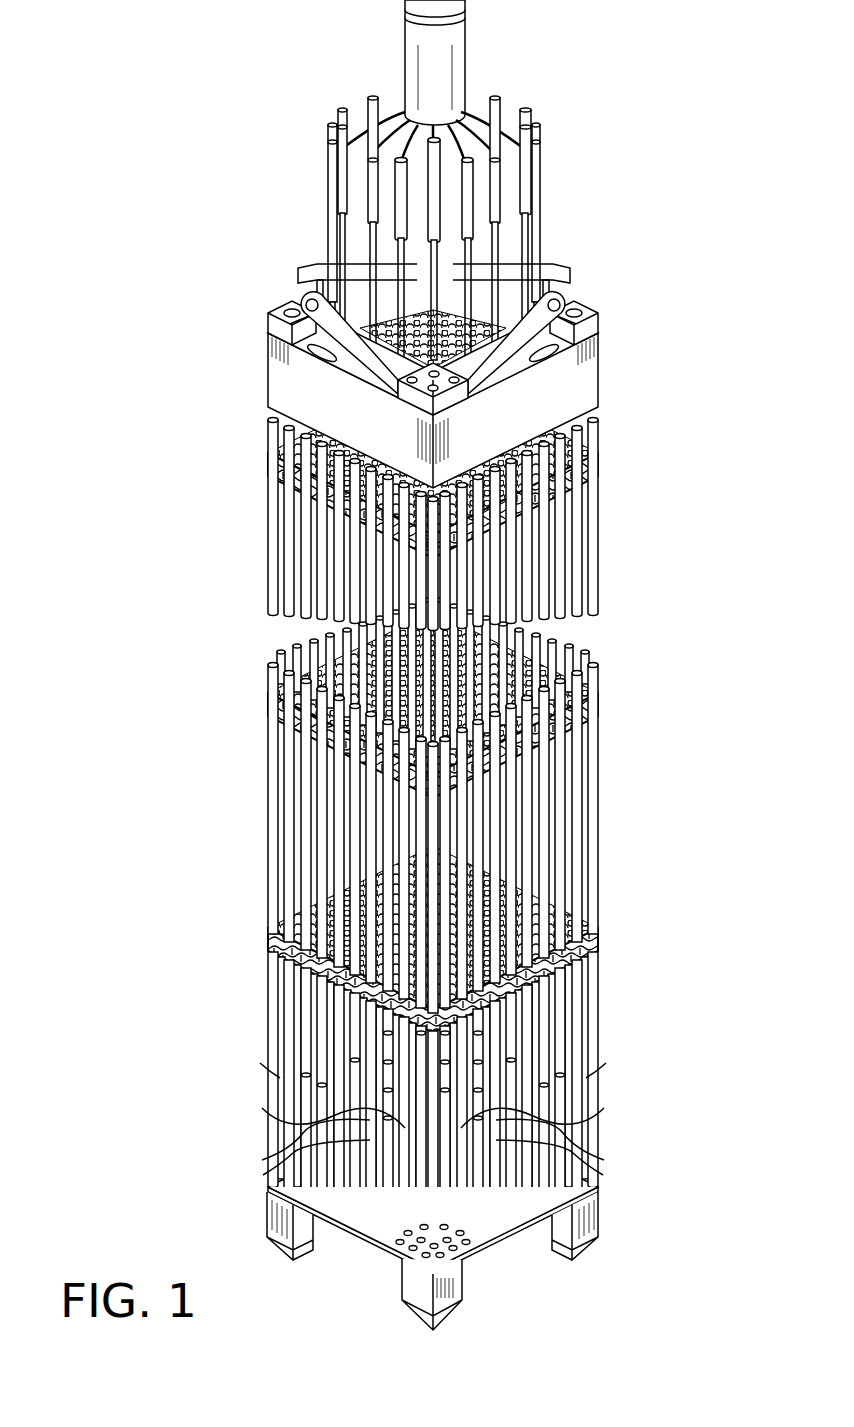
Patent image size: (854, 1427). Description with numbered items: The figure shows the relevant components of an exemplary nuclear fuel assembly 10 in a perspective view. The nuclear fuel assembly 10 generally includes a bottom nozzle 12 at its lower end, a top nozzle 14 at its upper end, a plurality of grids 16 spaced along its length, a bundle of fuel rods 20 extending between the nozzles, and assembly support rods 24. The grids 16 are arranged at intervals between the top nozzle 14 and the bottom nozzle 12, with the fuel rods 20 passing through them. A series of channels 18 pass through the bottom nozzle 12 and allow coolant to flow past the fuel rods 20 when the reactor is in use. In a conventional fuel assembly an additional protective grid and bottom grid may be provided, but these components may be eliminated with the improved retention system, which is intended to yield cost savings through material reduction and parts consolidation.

The nuclear fuel assembly 10 is at (432, 665).
The bottom nozzle 12 is at (474, 1253).
The top nozzle 14 is at (580, 382).
The grids 16 is at (553, 495).
The channels 18 is at (455, 1242).
The fuel rods 20 is at (288, 820).
The assembly support rods 24 is at (270, 1177).